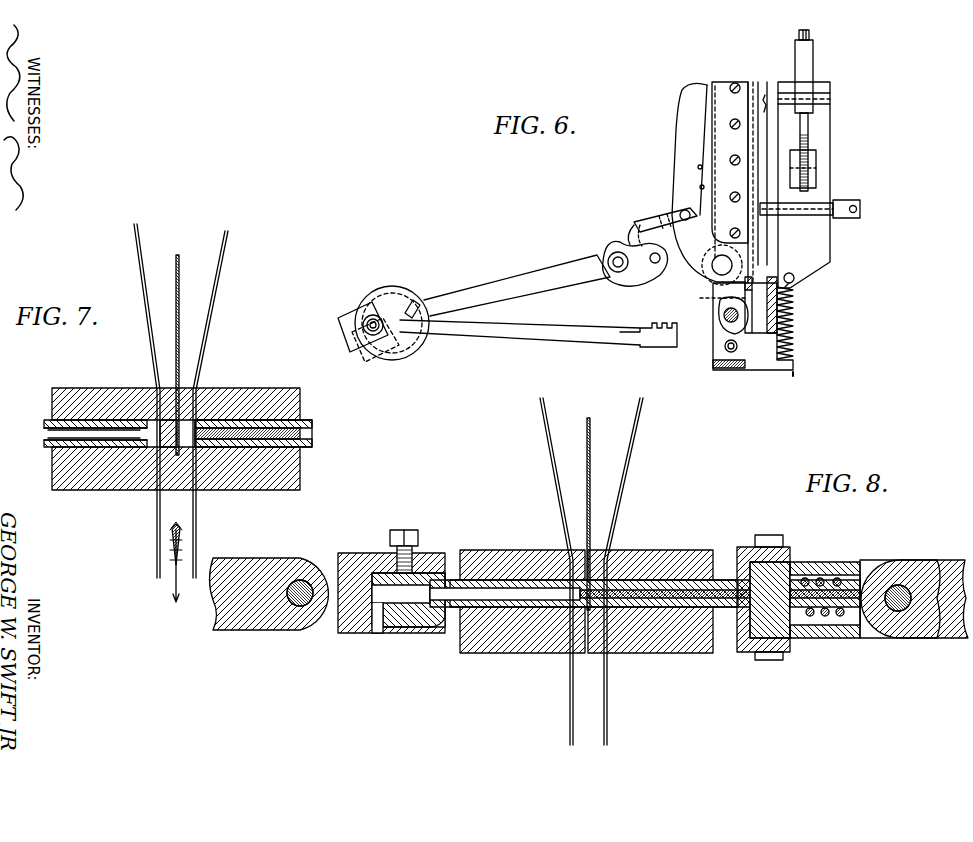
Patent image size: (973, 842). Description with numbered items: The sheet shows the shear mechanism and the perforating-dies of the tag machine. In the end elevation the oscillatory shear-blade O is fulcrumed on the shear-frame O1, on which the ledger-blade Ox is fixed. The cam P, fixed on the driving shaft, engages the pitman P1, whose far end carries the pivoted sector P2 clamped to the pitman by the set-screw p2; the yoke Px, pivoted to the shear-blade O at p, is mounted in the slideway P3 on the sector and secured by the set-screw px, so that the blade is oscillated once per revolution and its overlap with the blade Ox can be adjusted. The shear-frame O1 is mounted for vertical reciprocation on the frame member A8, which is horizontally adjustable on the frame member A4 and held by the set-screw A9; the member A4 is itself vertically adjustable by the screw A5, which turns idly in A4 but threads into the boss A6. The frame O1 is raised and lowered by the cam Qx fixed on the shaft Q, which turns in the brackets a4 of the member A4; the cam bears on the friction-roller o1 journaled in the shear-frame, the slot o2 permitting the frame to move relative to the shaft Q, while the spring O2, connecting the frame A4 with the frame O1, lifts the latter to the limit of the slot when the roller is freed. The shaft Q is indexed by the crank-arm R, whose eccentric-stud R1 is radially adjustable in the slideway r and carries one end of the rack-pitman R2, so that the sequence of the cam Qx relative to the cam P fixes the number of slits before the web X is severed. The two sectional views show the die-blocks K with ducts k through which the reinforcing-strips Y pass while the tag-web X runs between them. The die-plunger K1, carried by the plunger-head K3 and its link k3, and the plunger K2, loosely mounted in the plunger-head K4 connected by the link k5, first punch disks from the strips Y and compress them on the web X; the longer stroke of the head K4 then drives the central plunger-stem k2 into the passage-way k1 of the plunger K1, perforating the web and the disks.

In FIG. 6, the frame member A4 is at (822, 131).
In FIG. 6, the screw A5 is at (812, 62).
In FIG. 6, the boss A6 is at (816, 169).
In FIG. 6, the frame member A8 is at (765, 92).
In FIG. 6, the set-screw A9 is at (840, 218).
In FIG. 6, the oscillatory shear-blade O is at (690, 152).
In FIG. 6, the shear-frame O1 is at (748, 82).
In FIG. 6, the spring O2 is at (795, 327).
In FIG. 6, the ledger-blade Ox is at (734, 160).
In FIG. 6, the friction-roller o1 is at (714, 267).
In FIG. 6, the slot o2 is at (722, 305).
In FIG. 6, the brackets a4 is at (768, 296).
In FIG. 6, the shaft Q is at (722, 316).
In FIG. 6, the cam Qx is at (724, 346).
In FIG. 6, the cam P is at (396, 286).
In FIG. 6, the pitman P1 is at (517, 285).
In FIG. 6, the pivoted sector P2 is at (654, 256).
In FIG. 6, the slideway P3 is at (646, 218).
In FIG. 6, the yoke Px is at (666, 214).
In FIG. 6, the pivot p is at (687, 210).
In FIG. 6, the set-screw px is at (640, 224).
In FIG. 6, the set-screw p2 is at (611, 256).
In FIG. 6, the crank-arm R is at (420, 340).
In FIG. 6, the eccentric-stud R1 is at (366, 320).
In FIG. 6, the rack-pitman R2 is at (518, 332).
In FIG. 6, the slideway r is at (344, 342).
In FIG. 7, the die-blocks K is at (98, 392).
In FIG. 8, the die-blocks K is at (658, 556).
In FIG. 7, the ducts k is at (154, 388).
In FIG. 8, the ducts k is at (826, 638).
In FIG. 7, the die-plunger K1 is at (66, 420).
In FIG. 8, the die-plunger K1 is at (438, 615).
In FIG. 7, the passage-way k1 is at (50, 434).
In FIG. 8, the passage-way k1 is at (494, 580).
In FIG. 7, the plunger K2 is at (306, 424).
In FIG. 8, the plunger K2 is at (742, 628).
In FIG. 7, the plunger-stem k2 is at (312, 438).
In FIG. 8, the plunger-head K3 is at (348, 562).
In FIG. 8, the link k3 is at (260, 630).
In FIG. 8, the plunger-head K4 is at (855, 562).
In FIG. 8, the link k5 is at (955, 632).
In FIG. 7, the tag-web X is at (176, 341).
In FIG. 8, the tag-web X is at (586, 501).
In FIG. 7, the reinforcing-strips Y is at (140, 270).
In FIG. 8, the reinforcing-strips Y is at (550, 441).